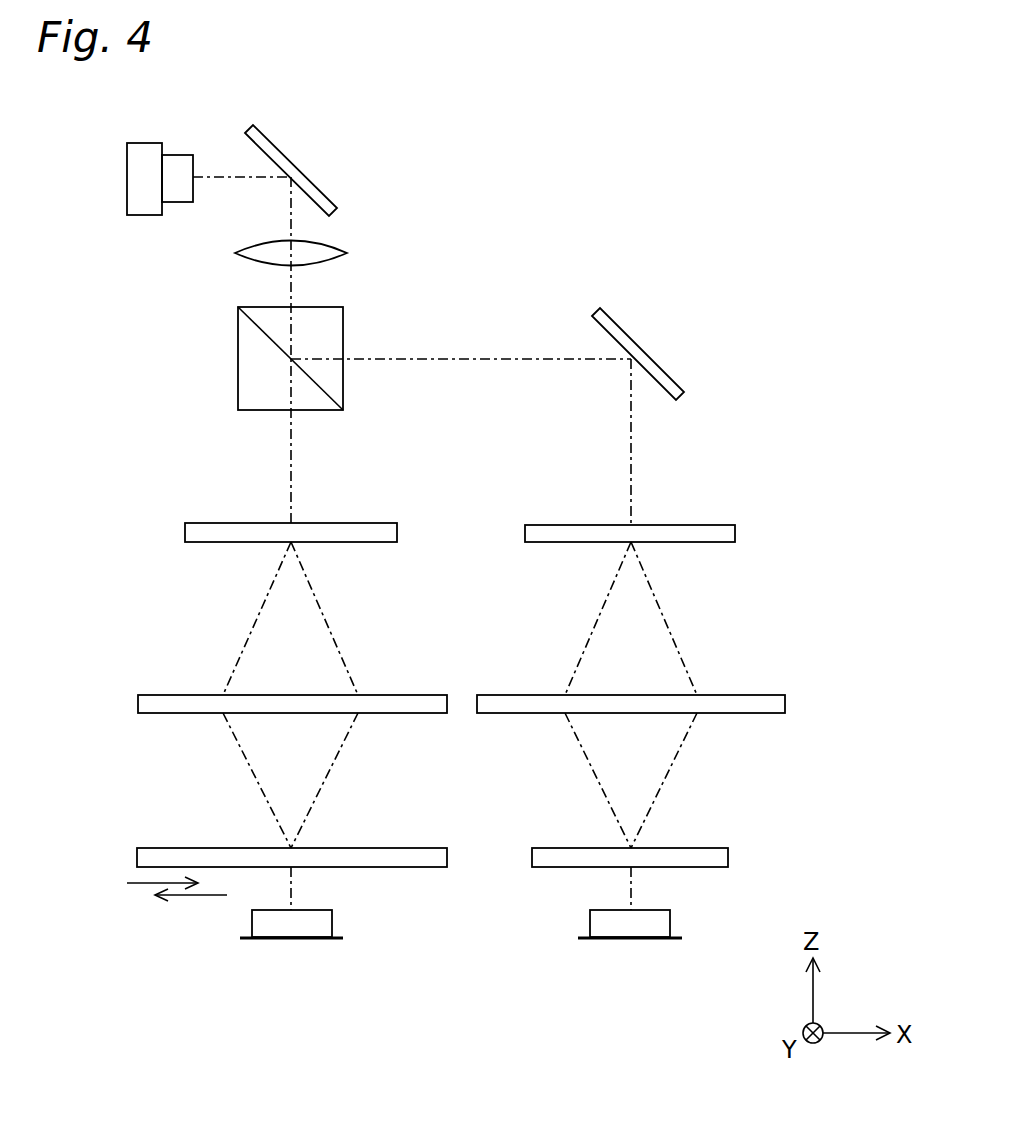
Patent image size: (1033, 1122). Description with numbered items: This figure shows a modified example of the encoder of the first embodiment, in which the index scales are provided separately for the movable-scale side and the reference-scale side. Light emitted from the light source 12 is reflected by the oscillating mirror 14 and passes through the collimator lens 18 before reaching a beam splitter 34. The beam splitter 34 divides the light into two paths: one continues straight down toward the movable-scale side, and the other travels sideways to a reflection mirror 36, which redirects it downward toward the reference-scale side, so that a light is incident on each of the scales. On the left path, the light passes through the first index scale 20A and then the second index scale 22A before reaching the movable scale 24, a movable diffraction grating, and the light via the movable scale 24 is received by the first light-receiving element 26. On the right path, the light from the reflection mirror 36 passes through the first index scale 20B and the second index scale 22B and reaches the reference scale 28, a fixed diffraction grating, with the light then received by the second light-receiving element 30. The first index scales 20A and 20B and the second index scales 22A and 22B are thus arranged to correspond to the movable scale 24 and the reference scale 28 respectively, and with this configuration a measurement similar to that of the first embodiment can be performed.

The light source 12 is at (185, 155).
The oscillating mirror 14 is at (297, 165).
The collimator lens 18 is at (346, 246).
The beam splitter 34 is at (238, 368).
The reflection mirror 36 is at (651, 357).
The first index scale 20A is at (205, 523).
The first index scale 20B is at (727, 525).
The second index scale 22A is at (185, 695).
The second index scale 22B is at (785, 700).
The movable scale 24 is at (185, 848).
The first light-receiving element 26 is at (332, 925).
The reference scale 28 is at (728, 855).
The second light-receiving element 30 is at (670, 925).